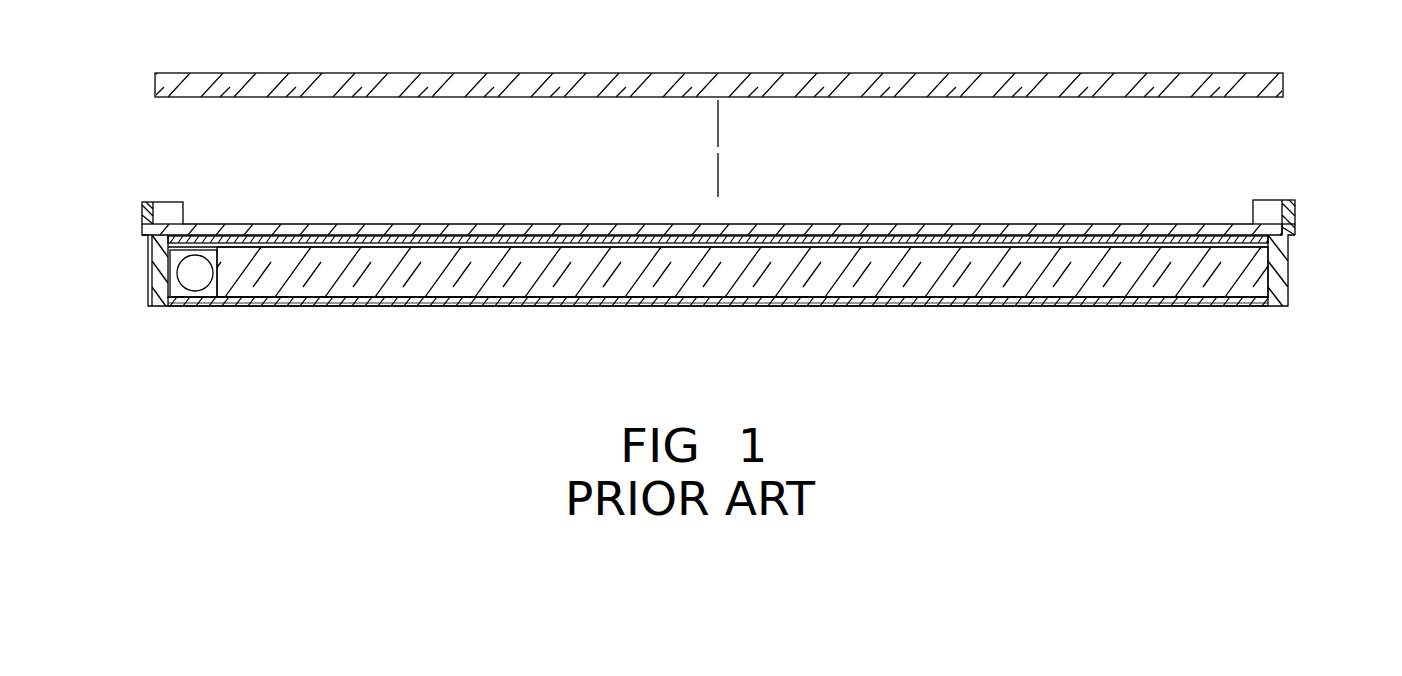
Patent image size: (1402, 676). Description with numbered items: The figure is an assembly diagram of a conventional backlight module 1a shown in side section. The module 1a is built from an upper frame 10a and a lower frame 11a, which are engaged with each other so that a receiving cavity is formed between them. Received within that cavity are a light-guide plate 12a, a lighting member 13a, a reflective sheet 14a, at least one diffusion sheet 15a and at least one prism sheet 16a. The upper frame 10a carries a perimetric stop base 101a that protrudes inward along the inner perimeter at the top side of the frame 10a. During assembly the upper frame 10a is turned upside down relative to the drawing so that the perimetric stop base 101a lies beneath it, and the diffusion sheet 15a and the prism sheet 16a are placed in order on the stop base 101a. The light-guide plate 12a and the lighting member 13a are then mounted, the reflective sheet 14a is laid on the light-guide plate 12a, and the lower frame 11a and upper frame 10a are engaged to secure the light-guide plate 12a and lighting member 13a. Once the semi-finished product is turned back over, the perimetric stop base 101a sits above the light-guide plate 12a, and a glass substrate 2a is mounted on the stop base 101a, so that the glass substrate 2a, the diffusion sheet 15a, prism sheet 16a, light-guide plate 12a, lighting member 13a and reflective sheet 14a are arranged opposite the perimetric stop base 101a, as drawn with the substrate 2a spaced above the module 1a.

The conventional backlight module 1a is at (136, 231).
The glass substrate 2a is at (1283, 84).
The perimetric stop base 101a is at (1262, 226).
The upper frame 10a is at (1284, 217).
The lower frame 11a is at (1288, 301).
The light-guide plate 12a is at (362, 277).
The lighting member 13a is at (195, 287).
The reflective sheet 14a is at (1263, 300).
The diffusion sheet 15a is at (1274, 262).
The prism sheet 16a is at (1272, 240).